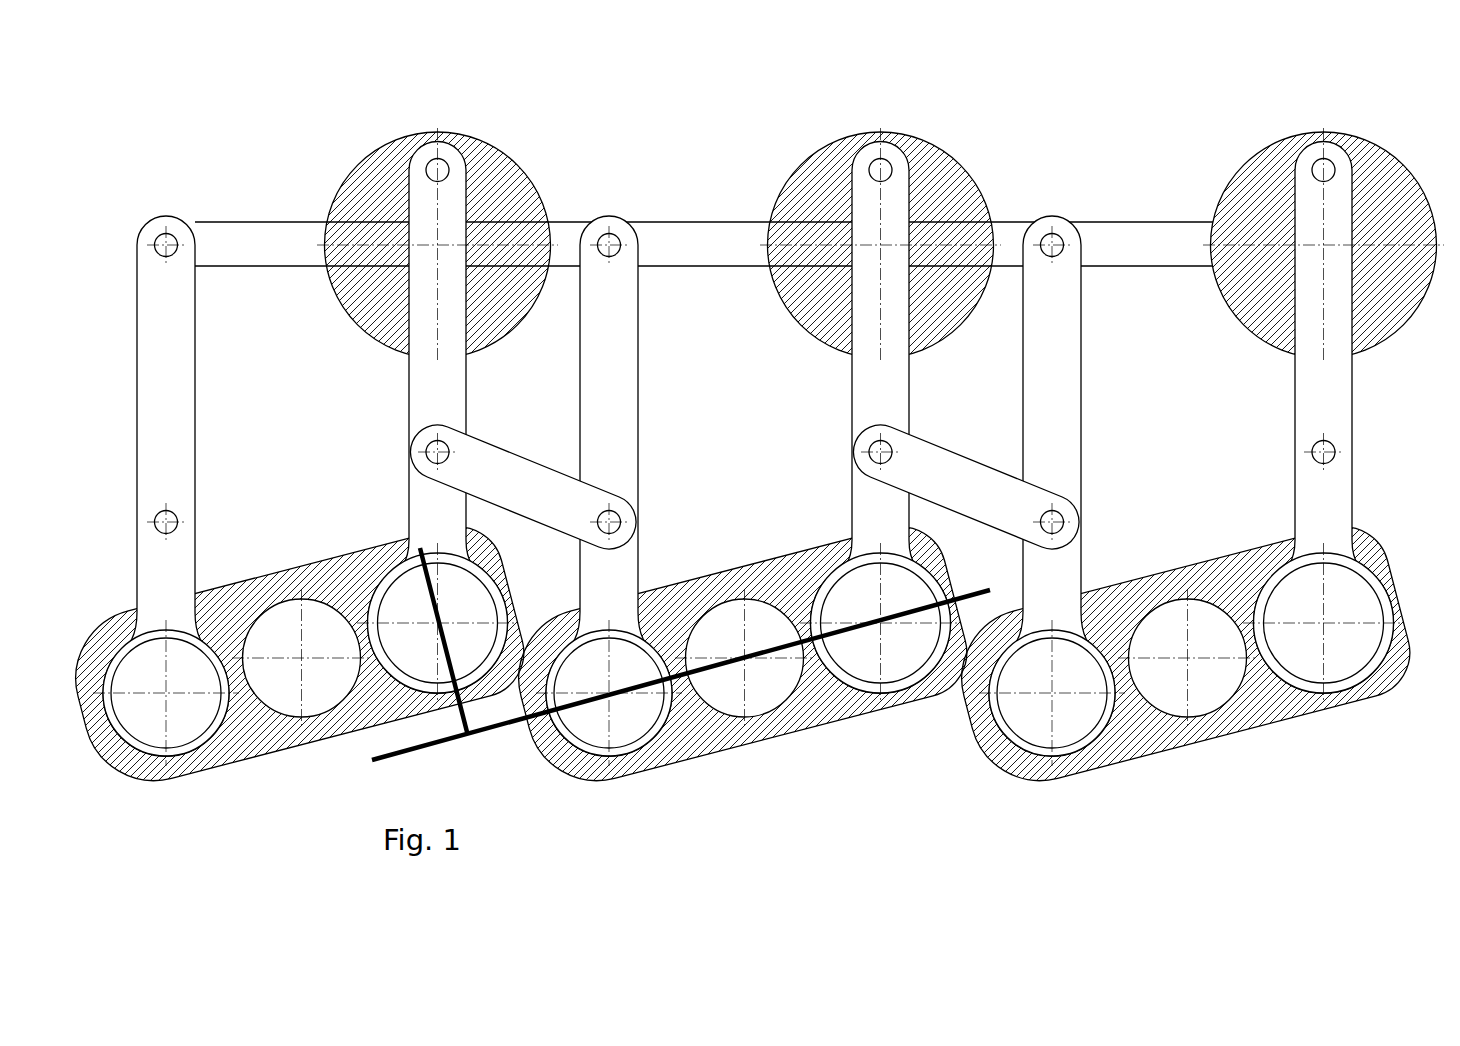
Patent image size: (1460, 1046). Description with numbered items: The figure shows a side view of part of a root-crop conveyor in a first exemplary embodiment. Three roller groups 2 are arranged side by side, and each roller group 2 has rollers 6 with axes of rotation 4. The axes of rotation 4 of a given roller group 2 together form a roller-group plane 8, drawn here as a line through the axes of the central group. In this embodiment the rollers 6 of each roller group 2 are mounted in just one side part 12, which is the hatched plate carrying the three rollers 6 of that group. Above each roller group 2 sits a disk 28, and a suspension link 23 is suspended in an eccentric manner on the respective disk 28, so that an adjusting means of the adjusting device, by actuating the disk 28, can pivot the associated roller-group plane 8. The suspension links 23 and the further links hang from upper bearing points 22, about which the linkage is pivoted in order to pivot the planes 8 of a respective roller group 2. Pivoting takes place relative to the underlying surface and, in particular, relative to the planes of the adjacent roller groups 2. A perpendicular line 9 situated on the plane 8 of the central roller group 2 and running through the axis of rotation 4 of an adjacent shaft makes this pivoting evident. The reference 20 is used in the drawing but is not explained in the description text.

The roller group 2 is at (273, 773).
The axis of rotation 4 is at (165, 699).
The roller 6 is at (325, 627).
The roller-group plane 8 is at (510, 729).
The perpendicular line 9 is at (425, 592).
The side part 12 is at (233, 607).
The lever arrangement 20 is at (562, 195).
The upper bearing point 22 is at (436, 166).
The suspension link 23 is at (425, 290).
The disk 28 is at (496, 193).